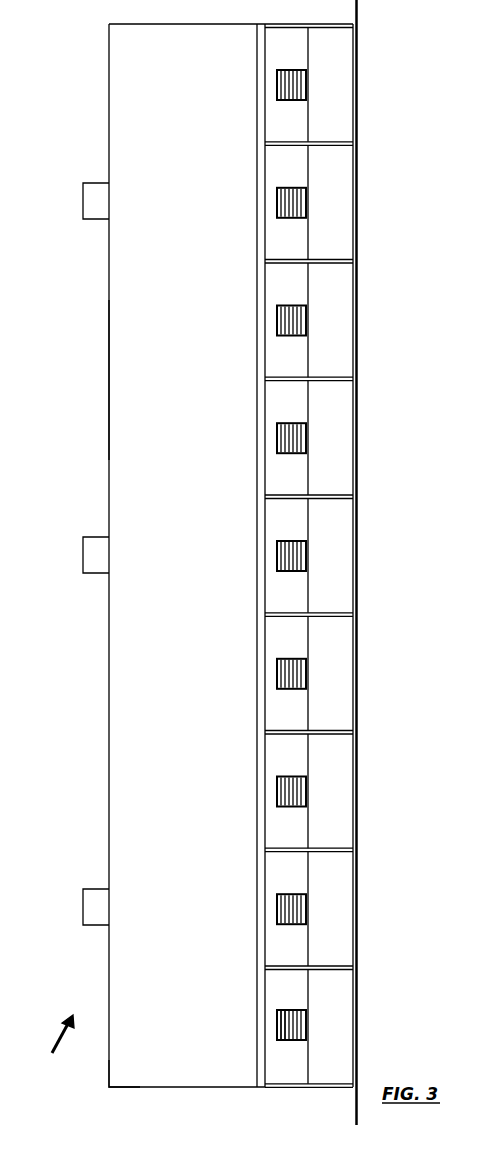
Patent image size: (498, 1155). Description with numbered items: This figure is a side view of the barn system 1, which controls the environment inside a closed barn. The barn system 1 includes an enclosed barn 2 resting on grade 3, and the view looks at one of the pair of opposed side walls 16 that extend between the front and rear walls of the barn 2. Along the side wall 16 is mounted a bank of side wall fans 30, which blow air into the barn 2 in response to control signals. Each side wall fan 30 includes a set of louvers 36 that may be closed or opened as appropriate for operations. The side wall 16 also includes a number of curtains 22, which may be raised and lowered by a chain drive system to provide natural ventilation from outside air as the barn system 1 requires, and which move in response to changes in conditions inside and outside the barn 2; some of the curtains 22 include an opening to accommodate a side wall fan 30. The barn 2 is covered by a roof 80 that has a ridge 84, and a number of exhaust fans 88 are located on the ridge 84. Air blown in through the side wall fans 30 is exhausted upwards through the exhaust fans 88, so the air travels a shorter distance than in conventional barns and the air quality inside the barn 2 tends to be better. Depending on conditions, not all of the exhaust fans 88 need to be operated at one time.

The barn system 1 is at (54, 1080).
The enclosed barn 2 is at (107, 1087).
The grade 3 is at (355, 1112).
The side wall 16 is at (298, 1062).
The curtain 22 is at (288, 124).
The side wall fan 30 is at (287, 70).
The louvers 36 is at (298, 1020).
The roof 80 is at (138, 128).
The ridge 84 is at (109, 383).
The exhaust fan 88 is at (92, 198).